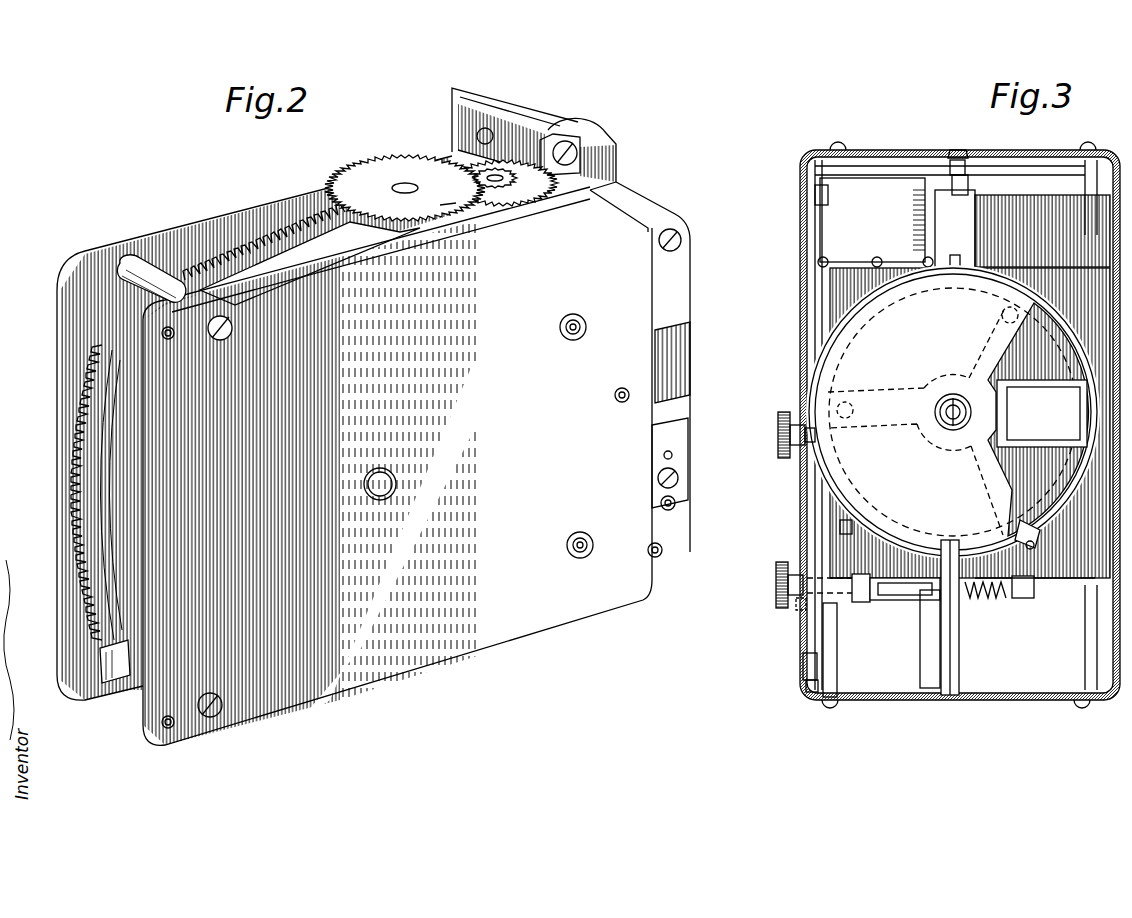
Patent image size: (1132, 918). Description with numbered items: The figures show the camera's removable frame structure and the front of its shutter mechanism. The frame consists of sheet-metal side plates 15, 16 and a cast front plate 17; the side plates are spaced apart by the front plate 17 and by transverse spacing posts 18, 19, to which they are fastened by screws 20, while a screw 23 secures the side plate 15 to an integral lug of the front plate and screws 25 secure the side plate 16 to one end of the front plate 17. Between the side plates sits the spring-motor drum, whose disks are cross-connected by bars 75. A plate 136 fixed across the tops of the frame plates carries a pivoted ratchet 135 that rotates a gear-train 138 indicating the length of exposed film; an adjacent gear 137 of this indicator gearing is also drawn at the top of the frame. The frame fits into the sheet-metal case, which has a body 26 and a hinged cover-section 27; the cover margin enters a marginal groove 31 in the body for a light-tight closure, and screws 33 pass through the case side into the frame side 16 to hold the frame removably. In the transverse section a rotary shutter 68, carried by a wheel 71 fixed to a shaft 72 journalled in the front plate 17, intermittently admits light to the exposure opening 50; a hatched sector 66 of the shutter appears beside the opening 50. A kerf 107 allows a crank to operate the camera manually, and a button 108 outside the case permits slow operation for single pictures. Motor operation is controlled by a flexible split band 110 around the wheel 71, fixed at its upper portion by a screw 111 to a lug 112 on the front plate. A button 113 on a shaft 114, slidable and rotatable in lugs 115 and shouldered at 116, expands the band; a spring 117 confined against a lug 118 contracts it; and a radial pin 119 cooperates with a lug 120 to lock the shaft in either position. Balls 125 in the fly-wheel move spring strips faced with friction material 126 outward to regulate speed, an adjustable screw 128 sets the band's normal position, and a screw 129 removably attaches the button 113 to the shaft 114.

In FIG. 2, the side plate 15 is at (203, 222).
In FIG. 2, the side plate 16 is at (416, 466).
In FIG. 2, the front plate 17 is at (524, 110).
In FIG. 3, the front plate 17 is at (962, 560).
In FIG. 2, the spacing post 18 is at (147, 276).
In FIG. 2, the spacing post 19 is at (128, 690).
In FIG. 2, the screw 20 is at (232, 333).
In FIG. 2, the screw 23 is at (582, 142).
In FIG. 2, the screw 25 is at (682, 242).
In FIG. 2, the bar 75 is at (118, 378).
In FIG. 2, the ratchet 135 is at (513, 217).
In FIG. 2, the plate 136 is at (390, 233).
In FIG. 2, the pinion 137 is at (497, 193).
In FIG. 2, the gear-train 138 is at (448, 205).
In FIG. 3, the body 26 is at (885, 150).
In FIG. 3, the cover-section 27 is at (1104, 152).
In FIG. 3, the marginal groove 31 is at (958, 152).
In FIG. 3, the screw 33 is at (814, 190).
In FIG. 3, the exposure opening 50 is at (1042, 413).
In FIG. 3, the sector 66 is at (1003, 350).
In FIG. 3, the rotary shutter 68 is at (953, 412).
In FIG. 3, the wheel 71 is at (1032, 303).
In FIG. 3, the shaft 72 is at (951, 424).
In FIG. 3, the kerf 107 is at (790, 430).
In FIG. 3, the thumb-wheel or button 108 is at (790, 458).
In FIG. 3, the flexible split band 110 is at (1062, 332).
In FIG. 3, the screw 111 is at (992, 235).
In FIG. 3, the lug 112 is at (968, 207).
In FIG. 3, the button 113 is at (800, 618).
In FIG. 3, the shaft 114 is at (892, 601).
In FIG. 3, the lug 115 is at (846, 603).
In FIG. 3, the shoulder 116 is at (965, 598).
In FIG. 3, the spring 117 is at (1005, 600).
In FIG. 3, the lug 118 is at (1007, 600).
In FIG. 3, the radial pin 119 is at (806, 692).
In FIG. 3, the lug 120 is at (873, 603).
In FIG. 3, the ball 125 is at (1042, 538).
In FIG. 3, the friction material 126 is at (1054, 527).
In FIG. 3, the adjustable screw 128 is at (845, 528).
In FIG. 3, the screw 129 is at (788, 607).